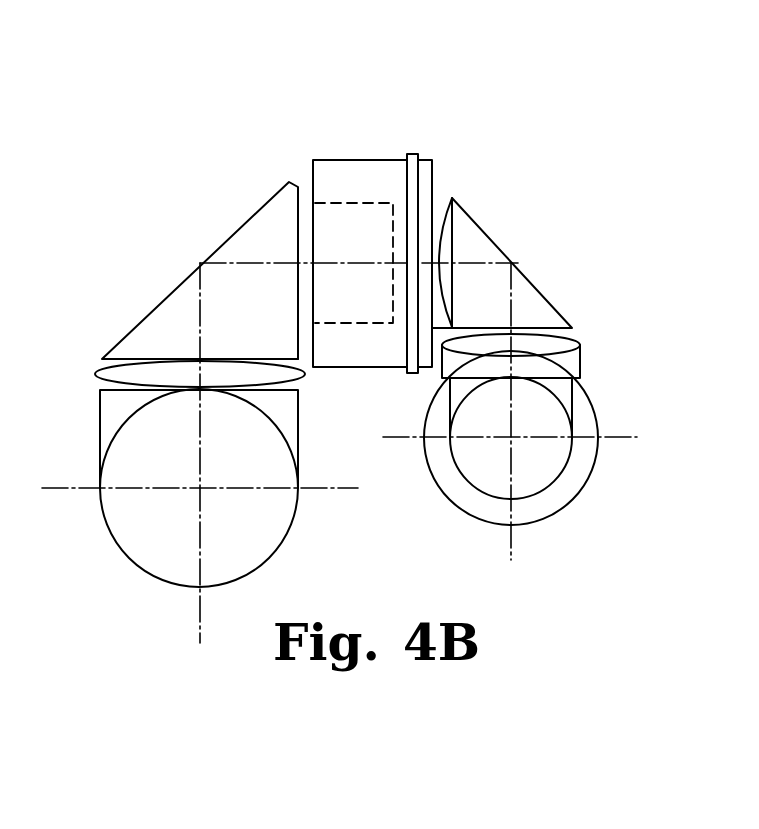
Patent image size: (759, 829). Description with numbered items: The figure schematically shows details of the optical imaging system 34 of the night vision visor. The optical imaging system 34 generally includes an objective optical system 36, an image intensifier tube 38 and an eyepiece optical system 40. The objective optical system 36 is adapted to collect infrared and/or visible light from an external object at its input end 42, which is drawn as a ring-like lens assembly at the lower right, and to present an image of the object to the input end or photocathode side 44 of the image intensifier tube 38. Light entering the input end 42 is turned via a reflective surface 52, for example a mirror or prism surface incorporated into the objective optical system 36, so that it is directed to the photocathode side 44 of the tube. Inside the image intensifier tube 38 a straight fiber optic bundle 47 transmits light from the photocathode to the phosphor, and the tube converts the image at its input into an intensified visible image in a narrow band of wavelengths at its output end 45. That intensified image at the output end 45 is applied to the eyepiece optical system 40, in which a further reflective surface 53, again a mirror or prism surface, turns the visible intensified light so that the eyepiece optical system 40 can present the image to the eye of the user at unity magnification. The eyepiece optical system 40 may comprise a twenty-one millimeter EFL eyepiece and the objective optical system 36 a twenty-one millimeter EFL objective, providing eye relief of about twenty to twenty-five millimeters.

The optical imaging system 34 is at (572, 288).
The objective optical system 36 is at (572, 432).
The image intensifier tube 38 is at (375, 259).
The eyepiece optical system 40 is at (170, 365).
The input end 42 is at (537, 468).
The photocathode side 44 is at (432, 172).
The output end 45 is at (308, 216).
The straight fiber optic bundle 47 is at (348, 323).
The reflective surface 52 is at (541, 281).
The reflective surface 53 is at (242, 215).